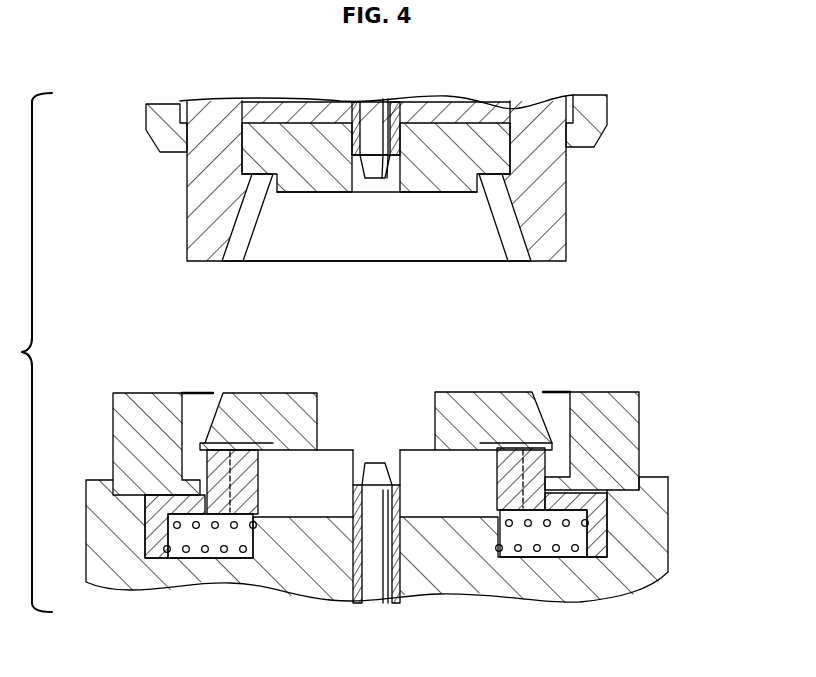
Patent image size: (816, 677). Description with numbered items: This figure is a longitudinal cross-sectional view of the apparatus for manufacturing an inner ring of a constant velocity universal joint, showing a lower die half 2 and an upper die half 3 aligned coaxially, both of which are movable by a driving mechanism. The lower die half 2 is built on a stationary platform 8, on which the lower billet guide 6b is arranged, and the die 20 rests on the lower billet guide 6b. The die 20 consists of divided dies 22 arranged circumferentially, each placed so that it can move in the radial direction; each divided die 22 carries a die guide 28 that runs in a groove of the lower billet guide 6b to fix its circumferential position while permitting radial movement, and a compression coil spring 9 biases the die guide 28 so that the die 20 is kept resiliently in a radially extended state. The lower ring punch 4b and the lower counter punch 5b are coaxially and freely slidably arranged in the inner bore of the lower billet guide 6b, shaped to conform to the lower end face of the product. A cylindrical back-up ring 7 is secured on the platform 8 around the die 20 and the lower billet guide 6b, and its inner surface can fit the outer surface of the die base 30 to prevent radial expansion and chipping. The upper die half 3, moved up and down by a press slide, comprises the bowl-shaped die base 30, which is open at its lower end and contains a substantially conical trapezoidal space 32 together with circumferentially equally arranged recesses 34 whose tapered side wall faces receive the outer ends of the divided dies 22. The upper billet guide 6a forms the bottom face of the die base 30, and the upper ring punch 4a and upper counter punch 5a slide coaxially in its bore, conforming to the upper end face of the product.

The lower die half 2 is at (131, 381).
The upper die half 3 is at (145, 255).
The upper ring punch 4a is at (356, 103).
The lower ring punch 4b is at (358, 598).
The upper counter punch 5a is at (374, 120).
The lower counter punch 5b is at (379, 592).
The upper billet guide 6a is at (435, 193).
The lower billet guide 6b is at (341, 455).
The back-up ring 7 is at (613, 400).
The platform 8 is at (659, 480).
The spring 9 is at (204, 558).
The die 20 is at (539, 376).
The divided die 22 is at (249, 397).
The die guide 28 is at (256, 480).
The die base 30 is at (567, 204).
The space 32 is at (335, 255).
The recess 34 is at (256, 239).